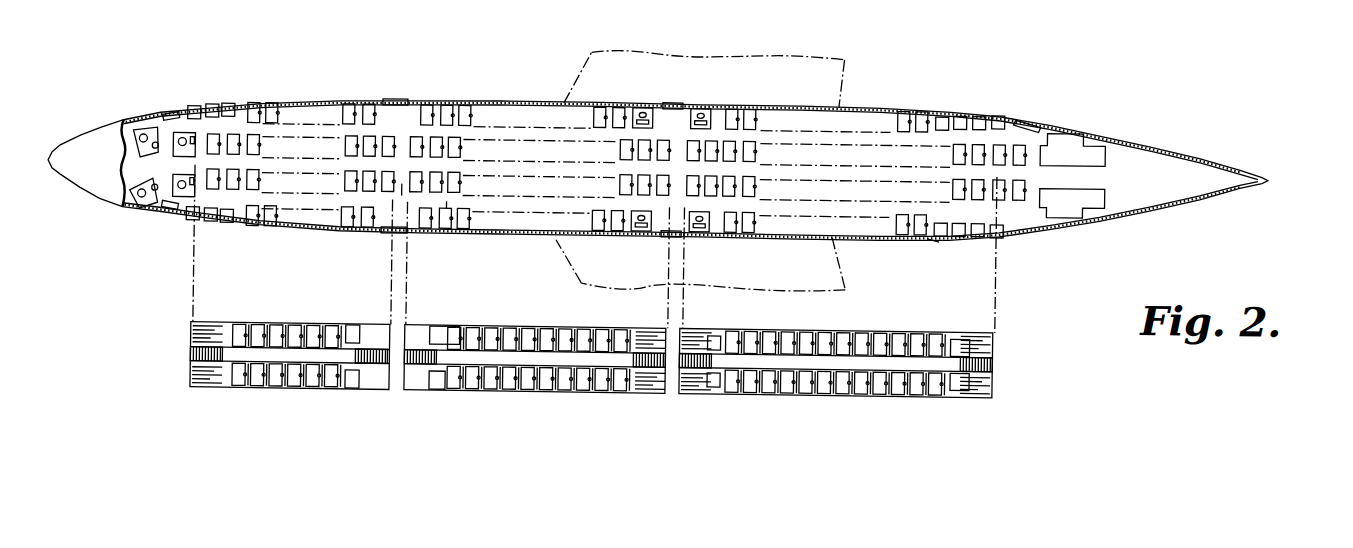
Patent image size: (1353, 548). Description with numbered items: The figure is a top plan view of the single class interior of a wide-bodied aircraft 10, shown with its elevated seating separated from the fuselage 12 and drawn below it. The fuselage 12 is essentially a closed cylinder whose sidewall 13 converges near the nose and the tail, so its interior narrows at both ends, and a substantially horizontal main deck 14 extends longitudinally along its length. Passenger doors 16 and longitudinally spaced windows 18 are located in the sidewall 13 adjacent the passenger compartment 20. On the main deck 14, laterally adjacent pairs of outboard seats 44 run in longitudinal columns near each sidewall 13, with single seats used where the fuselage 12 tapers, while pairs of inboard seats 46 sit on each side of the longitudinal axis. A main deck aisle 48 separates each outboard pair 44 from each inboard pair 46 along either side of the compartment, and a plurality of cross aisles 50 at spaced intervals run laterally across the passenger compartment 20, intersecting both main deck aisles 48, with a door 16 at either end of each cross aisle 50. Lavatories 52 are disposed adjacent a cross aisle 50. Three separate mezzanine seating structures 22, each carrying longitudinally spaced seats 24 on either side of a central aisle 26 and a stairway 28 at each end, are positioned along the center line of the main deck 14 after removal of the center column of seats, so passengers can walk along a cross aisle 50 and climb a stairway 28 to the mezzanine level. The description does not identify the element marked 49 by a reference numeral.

The wide-bodied aircraft 10 is at (658, 186).
The fuselage 12 is at (482, 236).
The sidewall 13 is at (934, 238).
The main deck 14 is at (405, 121).
The passenger door 16 is at (404, 98).
The windows 18 is at (213, 234).
The passenger compartment 20 is at (707, 132).
The mezzanine seating structure 22 is at (268, 390).
The seats 24 is at (318, 383).
The aisle 26 is at (303, 358).
The stairway 28 is at (193, 360).
The outboard seats 44 is at (347, 105).
The inboard seats 46 is at (237, 143).
The main deck aisle 48 is at (447, 208).
The aisles 49 is at (288, 136).
The cross aisles 50 is at (402, 187).
The lavatories 52 is at (643, 228).